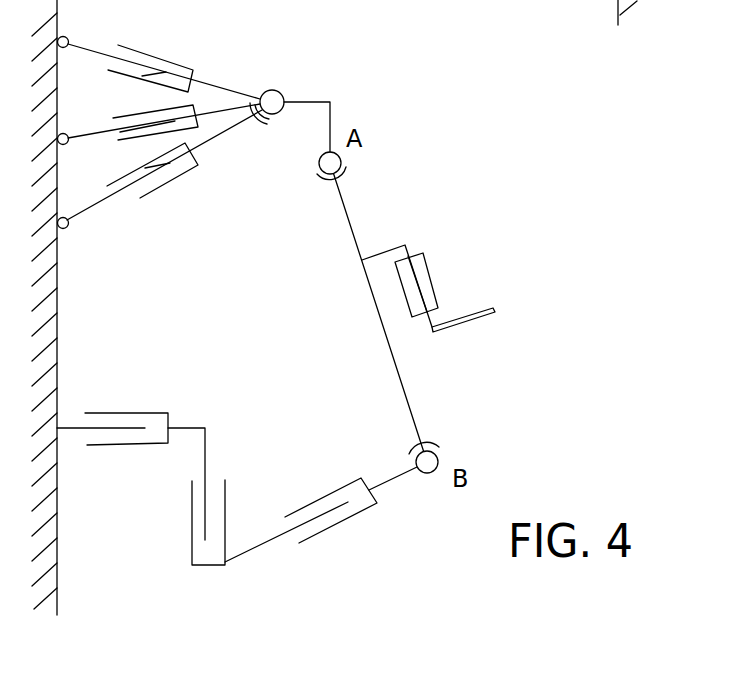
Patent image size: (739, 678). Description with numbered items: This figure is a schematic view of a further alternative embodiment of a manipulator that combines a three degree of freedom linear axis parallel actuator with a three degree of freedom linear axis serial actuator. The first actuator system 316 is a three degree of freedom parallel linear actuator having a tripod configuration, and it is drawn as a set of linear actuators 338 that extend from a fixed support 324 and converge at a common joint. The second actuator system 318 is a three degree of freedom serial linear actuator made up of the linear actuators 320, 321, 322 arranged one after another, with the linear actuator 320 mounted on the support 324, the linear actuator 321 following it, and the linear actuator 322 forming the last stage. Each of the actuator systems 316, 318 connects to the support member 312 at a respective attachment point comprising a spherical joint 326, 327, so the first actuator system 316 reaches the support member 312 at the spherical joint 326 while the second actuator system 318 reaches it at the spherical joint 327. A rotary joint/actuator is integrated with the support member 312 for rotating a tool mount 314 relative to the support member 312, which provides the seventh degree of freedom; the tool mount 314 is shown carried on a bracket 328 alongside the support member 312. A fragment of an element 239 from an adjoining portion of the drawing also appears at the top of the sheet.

The element of adjacent assembly 239 is at (592, 0).
The support member 312 is at (382, 330).
The tool mount 314 is at (475, 320).
The first actuator system 316 is at (255, 65).
The second actuator system 318 is at (273, 578).
The linear actuator 320 is at (120, 412).
The linear actuator 321 is at (192, 517).
The linear actuator 322 is at (345, 520).
The wall support 324 is at (55, 283).
The spherical joint 326 is at (354, 164).
The spherical joint 327 is at (452, 446).
The bracket 328 is at (452, 256).
The actuators 338 is at (162, 58).